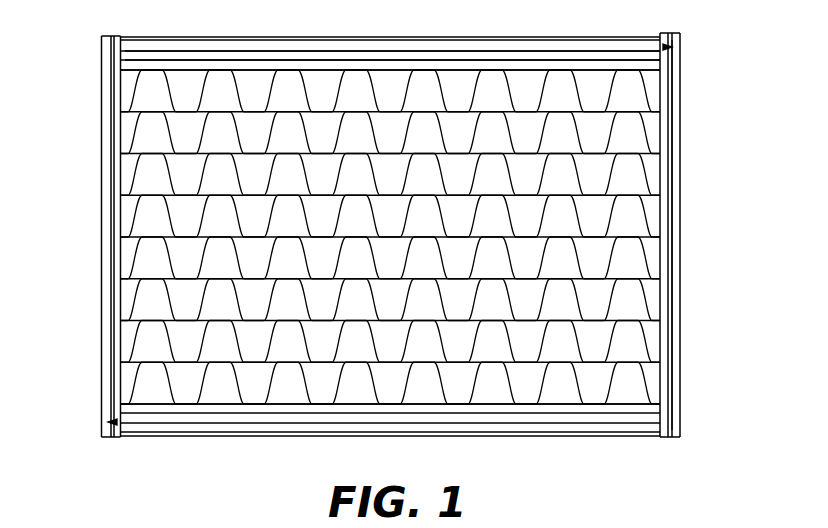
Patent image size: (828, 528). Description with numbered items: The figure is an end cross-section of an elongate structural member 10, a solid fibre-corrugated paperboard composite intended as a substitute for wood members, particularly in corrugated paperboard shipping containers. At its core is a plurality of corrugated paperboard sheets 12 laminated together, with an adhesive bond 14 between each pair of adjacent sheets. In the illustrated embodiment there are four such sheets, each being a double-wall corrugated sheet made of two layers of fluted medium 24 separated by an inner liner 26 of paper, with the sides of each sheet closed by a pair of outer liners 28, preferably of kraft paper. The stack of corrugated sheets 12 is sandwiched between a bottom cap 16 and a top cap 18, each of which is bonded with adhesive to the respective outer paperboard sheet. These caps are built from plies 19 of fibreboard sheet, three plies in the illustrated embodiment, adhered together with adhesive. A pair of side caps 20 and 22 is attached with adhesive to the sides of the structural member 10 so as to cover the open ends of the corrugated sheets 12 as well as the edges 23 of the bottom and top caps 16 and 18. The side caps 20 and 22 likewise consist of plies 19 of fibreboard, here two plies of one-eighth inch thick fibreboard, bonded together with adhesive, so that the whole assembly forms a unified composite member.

The elongate structural member 10 is at (718, 81).
The corrugated paperboard sheets 12 is at (385, 228).
The adhesive bond 14 is at (660, 357).
The bottom cap 16 is at (373, 418).
The top cap 18 is at (482, 53).
The plies 19 is at (267, 63).
The side cap 20 is at (103, 328).
The side cap 22 is at (678, 395).
The edges 23 is at (667, 47).
The fluted medium 24 is at (128, 153).
The inner liner 26 is at (133, 152).
The outer liners 28 is at (128, 72).